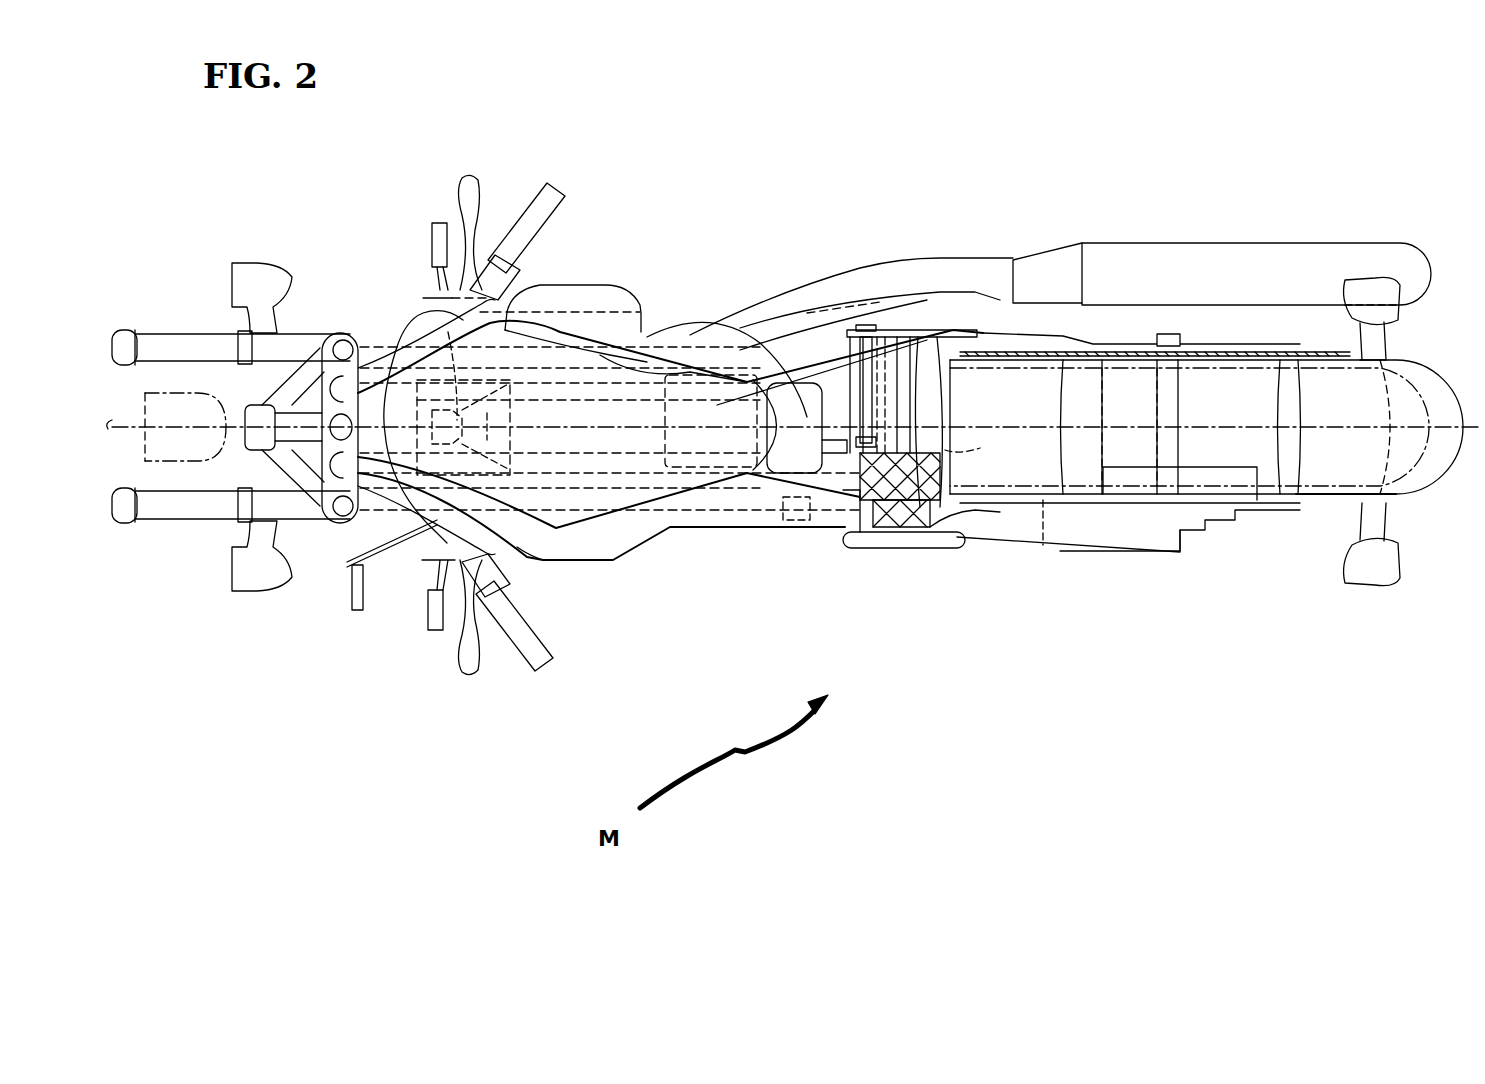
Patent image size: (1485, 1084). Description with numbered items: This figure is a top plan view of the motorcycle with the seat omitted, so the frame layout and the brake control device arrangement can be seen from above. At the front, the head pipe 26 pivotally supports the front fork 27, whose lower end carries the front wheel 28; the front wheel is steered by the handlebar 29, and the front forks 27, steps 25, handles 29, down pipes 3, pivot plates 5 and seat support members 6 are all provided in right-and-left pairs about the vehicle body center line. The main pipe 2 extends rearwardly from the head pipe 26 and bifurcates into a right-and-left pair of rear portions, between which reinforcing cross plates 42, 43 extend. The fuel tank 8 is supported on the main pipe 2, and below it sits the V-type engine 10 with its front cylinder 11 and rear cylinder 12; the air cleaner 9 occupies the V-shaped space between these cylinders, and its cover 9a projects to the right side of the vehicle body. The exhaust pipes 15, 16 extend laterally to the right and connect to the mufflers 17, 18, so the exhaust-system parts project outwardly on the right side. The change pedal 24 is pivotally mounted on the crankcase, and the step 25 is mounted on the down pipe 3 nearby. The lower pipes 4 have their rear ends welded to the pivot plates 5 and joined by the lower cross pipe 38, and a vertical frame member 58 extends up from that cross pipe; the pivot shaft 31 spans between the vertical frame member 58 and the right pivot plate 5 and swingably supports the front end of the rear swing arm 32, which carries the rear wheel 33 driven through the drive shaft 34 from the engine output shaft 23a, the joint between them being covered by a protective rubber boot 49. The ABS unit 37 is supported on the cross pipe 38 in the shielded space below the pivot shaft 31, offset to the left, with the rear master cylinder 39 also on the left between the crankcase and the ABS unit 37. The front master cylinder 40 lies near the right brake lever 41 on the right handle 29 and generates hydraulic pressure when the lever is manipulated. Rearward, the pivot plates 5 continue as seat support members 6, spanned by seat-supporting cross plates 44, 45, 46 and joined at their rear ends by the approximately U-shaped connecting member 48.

The main pipe 2 is at (640, 395).
The down pipe 3 is at (322, 340).
The lower pipe 4 is at (693, 353).
The pivot plate 5 is at (880, 548).
The seat support member 6 is at (973, 310).
The fuel tank 8 is at (600, 355).
The air cleaner 9 is at (575, 323).
The cover 9a is at (553, 282).
The V-type engine 10 is at (622, 570).
The front cylinder 11 is at (545, 560).
The rear cylinder 12 is at (695, 470).
The exhaust pipe 15 is at (412, 320).
The exhaust pipe 16 is at (800, 293).
The muffler 17 is at (1030, 333).
The muffler 18 is at (1200, 262).
The output shaft 23a is at (790, 520).
The change pedal 24 is at (347, 597).
The step 25 is at (433, 222).
The head pipe 26 is at (287, 403).
The front fork 27 is at (162, 334).
The front wheel 28 is at (210, 393).
The handlebar 29 is at (398, 368).
The pivot shaft 31 is at (830, 347).
The rear swing arm 32 is at (1095, 530).
The rear wheel 33 is at (1398, 470).
The drive shaft 34 is at (1045, 545).
The ABS unit 37 is at (918, 548).
The cross pipe 38 is at (945, 452).
The rear master cylinder 39 is at (830, 500).
The front master cylinder 40 is at (432, 290).
The right brake lever 41 is at (460, 195).
The reinforcing cross plate 42 is at (770, 347).
The reinforcing cross plate 43 is at (883, 347).
The seat-supporting cross plate 44 is at (927, 353).
The seat-supporting cross plate 45 is at (1070, 410).
The seat-supporting cross plate 46 is at (1175, 398).
The connecting member 48 is at (1325, 503).
The protective rubber boot 49 is at (848, 548).
The vertical frame member 58 is at (790, 313).